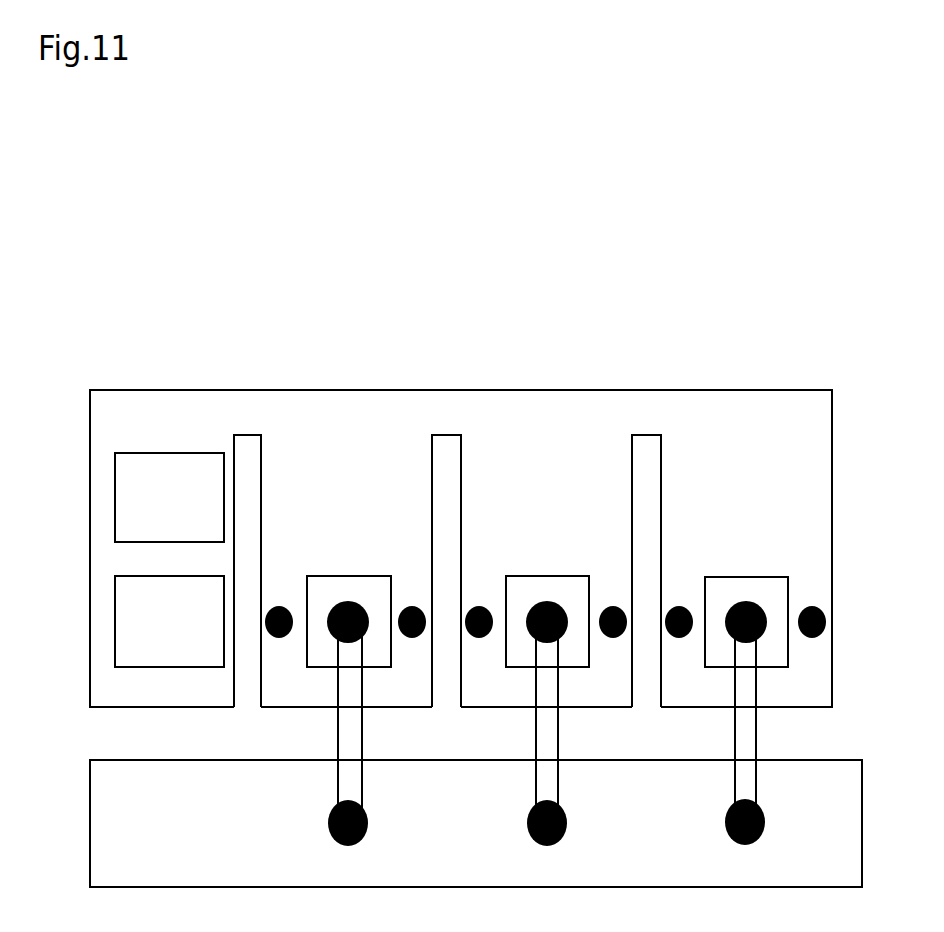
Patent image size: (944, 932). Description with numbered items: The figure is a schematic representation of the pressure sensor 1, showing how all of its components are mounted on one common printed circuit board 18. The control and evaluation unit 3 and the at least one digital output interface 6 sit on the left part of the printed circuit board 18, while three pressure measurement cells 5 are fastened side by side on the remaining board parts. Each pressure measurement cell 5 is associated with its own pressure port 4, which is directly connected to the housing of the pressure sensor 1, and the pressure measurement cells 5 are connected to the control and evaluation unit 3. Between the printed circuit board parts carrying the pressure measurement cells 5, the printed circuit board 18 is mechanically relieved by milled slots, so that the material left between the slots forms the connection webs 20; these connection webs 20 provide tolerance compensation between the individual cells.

The pressure sensor 1 is at (677, 248).
The control and evaluation unit 3 is at (115, 612).
The pressure port 4 is at (362, 808).
The pressure measurement cell 5 is at (327, 574).
The digital output interface 6 is at (115, 493).
The printed circuit board 18 is at (763, 388).
The connection web 20 is at (252, 408).